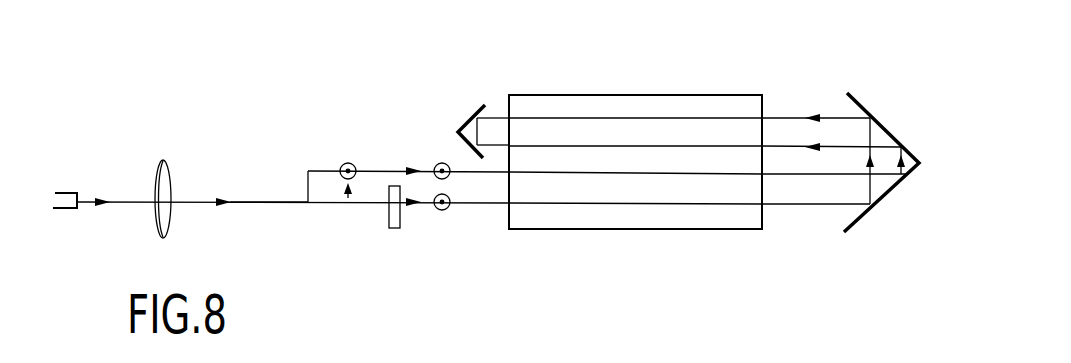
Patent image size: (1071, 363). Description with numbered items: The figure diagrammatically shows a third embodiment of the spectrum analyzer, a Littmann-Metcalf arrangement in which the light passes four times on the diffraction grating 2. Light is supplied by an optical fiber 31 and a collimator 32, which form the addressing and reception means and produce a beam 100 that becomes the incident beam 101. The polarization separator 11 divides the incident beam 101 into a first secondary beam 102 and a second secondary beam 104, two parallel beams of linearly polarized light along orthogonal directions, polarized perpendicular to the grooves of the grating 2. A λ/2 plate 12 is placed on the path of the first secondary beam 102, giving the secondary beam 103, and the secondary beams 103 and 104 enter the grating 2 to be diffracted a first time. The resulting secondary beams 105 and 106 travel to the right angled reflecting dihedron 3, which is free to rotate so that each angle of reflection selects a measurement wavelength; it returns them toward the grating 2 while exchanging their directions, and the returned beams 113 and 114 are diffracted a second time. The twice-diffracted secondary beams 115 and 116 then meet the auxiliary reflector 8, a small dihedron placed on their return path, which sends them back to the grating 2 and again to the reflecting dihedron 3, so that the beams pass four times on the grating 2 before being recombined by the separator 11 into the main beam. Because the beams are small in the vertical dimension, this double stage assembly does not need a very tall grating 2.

The diffraction grating 2 is at (620, 88).
The right angled reflecting dihedron 3 is at (881, 104).
The auxiliary reflector 8 is at (466, 121).
The polarization separator 11 is at (307, 218).
The λ/2 plate 12 is at (395, 230).
The optical fiber 31 is at (73, 192).
The collimator 32 is at (168, 162).
The input beam 100 is at (122, 205).
The incident beam 101 is at (193, 205).
The first secondary beam 102 is at (367, 204).
The secondary beam 103 is at (483, 207).
The second secondary beam 104 is at (377, 170).
The secondary beam 105 is at (832, 207).
The secondary beam 106 is at (787, 177).
The reflected beam 113 is at (792, 116).
The reflected beam 114 is at (833, 145).
The twice-diffracted secondary beam 115 is at (495, 117).
The twice-diffracted secondary beam 116 is at (494, 144).